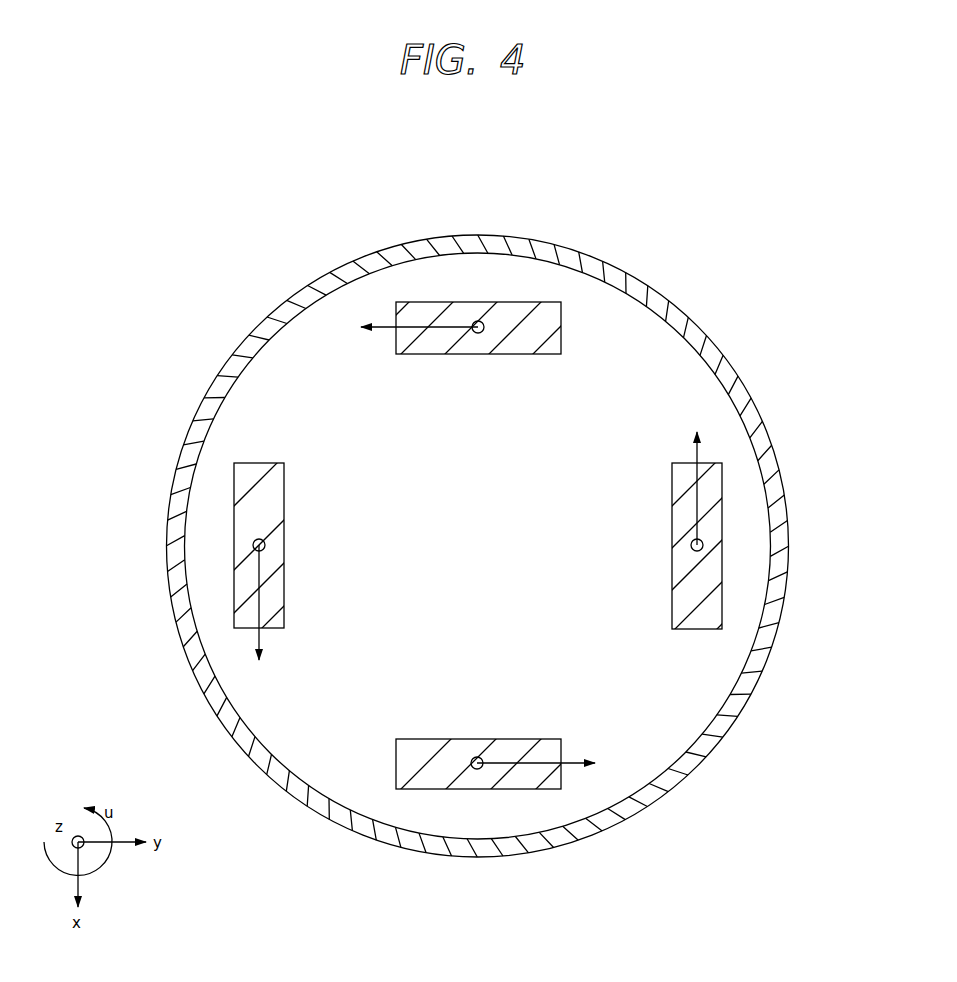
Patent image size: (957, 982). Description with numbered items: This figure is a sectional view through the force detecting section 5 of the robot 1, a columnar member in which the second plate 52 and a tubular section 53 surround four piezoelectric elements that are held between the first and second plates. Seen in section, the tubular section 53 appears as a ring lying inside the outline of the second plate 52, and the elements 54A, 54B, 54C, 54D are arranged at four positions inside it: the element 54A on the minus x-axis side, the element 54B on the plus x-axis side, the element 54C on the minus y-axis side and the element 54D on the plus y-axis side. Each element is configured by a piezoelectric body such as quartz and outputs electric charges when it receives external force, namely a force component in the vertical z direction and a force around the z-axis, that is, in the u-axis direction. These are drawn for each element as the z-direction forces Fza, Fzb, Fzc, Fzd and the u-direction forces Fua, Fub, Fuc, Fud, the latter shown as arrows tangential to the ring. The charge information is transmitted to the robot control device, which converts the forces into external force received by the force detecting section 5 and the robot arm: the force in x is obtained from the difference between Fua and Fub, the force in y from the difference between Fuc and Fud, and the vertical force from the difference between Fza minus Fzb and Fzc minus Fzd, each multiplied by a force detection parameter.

The dynamic quantity sensor / electronic apparatus 1 is at (176, 230).
The force detecting section 5 is at (663, 257).
The second plate 52 is at (338, 333).
The tubular section 53 is at (188, 647).
The element 54A is at (533, 325).
The element 54B is at (428, 778).
The element 54C is at (235, 492).
The element 54D is at (706, 610).
The force in the z direction received by the element 54A Fza is at (478, 320).
The force in the z direction received by the element 54B Fzb is at (476, 772).
The force in the z direction received by the element 54C Fzc is at (265, 539).
The force in the z direction received by the element 54D Fzd is at (698, 551).
The force in the u direction received by the element 54A Fua is at (386, 322).
The force in the u direction received by the element 54B Fub is at (567, 766).
The force in the u direction received by the element 54C Fuc is at (265, 642).
The force in the u direction received by the element 54D Fud is at (690, 448).